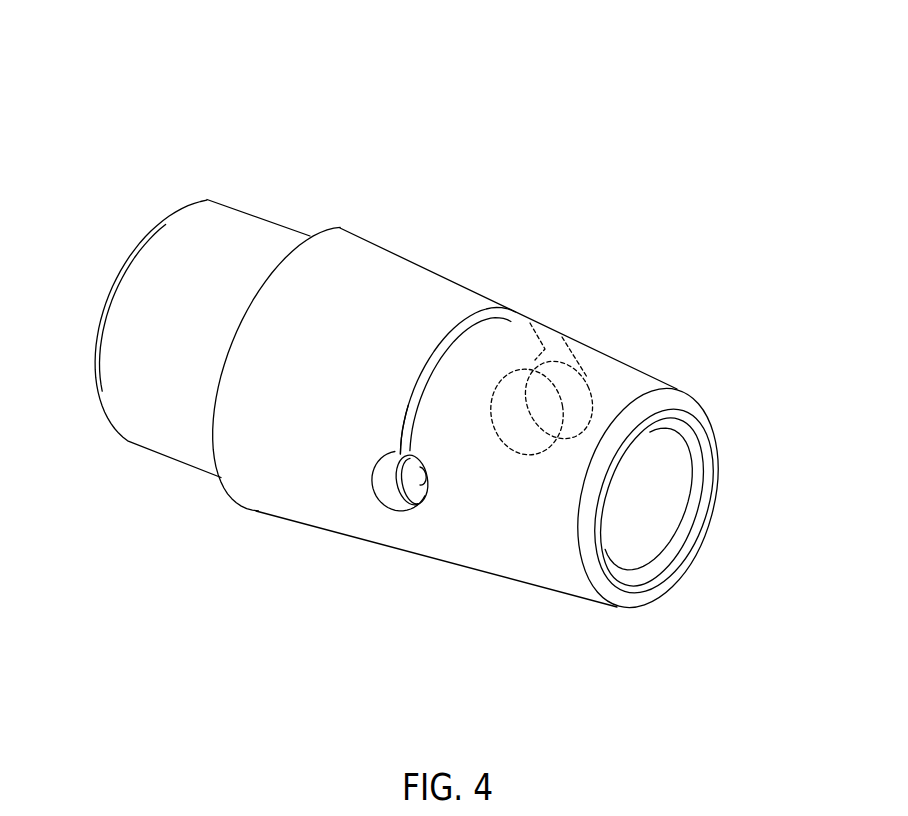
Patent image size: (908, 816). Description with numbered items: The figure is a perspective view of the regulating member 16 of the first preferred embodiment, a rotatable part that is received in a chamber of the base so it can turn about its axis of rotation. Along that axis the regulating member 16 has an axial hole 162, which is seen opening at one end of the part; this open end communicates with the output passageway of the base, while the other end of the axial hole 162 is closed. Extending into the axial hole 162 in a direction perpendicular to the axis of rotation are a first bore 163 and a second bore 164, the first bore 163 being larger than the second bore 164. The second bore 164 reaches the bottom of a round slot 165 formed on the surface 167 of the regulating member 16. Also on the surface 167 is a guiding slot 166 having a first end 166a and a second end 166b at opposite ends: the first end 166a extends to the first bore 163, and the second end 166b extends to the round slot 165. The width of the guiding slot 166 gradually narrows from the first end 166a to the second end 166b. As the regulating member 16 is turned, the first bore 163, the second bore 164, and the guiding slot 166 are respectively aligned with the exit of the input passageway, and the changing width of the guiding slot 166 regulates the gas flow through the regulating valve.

The regulating member 16 is at (803, 158).
The axial hole 162 is at (667, 487).
The first bore 163 is at (592, 384).
The second bore 164 is at (423, 470).
The round slot 165 is at (385, 489).
The guiding slot 166 is at (472, 313).
The first end 166a is at (560, 337).
The second end 166b is at (413, 440).
The surface 167 is at (300, 463).